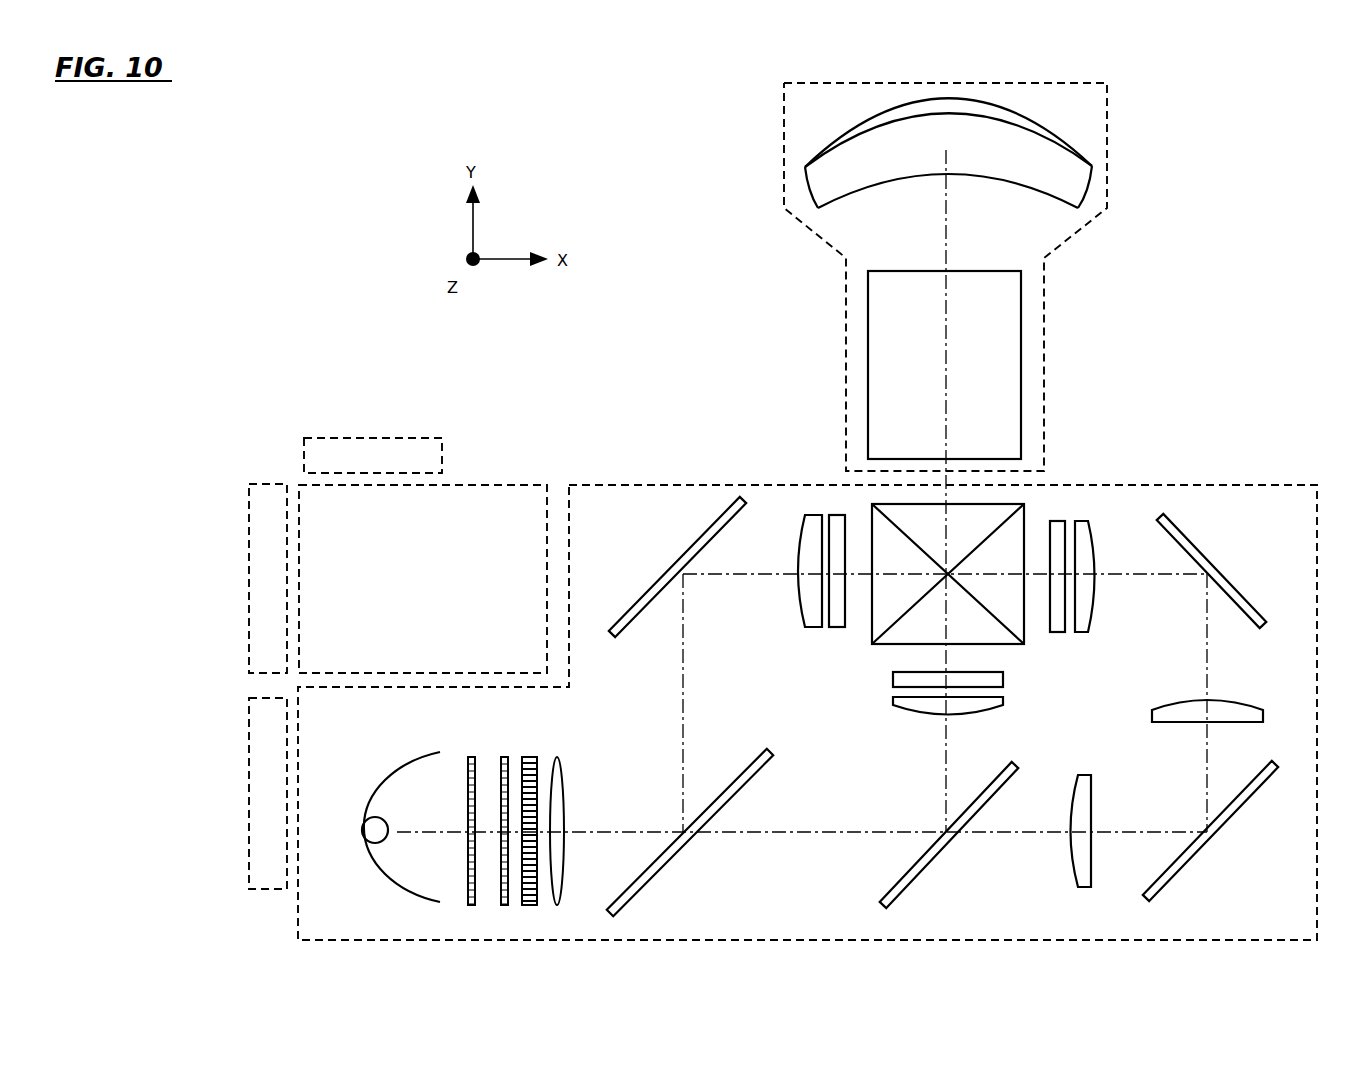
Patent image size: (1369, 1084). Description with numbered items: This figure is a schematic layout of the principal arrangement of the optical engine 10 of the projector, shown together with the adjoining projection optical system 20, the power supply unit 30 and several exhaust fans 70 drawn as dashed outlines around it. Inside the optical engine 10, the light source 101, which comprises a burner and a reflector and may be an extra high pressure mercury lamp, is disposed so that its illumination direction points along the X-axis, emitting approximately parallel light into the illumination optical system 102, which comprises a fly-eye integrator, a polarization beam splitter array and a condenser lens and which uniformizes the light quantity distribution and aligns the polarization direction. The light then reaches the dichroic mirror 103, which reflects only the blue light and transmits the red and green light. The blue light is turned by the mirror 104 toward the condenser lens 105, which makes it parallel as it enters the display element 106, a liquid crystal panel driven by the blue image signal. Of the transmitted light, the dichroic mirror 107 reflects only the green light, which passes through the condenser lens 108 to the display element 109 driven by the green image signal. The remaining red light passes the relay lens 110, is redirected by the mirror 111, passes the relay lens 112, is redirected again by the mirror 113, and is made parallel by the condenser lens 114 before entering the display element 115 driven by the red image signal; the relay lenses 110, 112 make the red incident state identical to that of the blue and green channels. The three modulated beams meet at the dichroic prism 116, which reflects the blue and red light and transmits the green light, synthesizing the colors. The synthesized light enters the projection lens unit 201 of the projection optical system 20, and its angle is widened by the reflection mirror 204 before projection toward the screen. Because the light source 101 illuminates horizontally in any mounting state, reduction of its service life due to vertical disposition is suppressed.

The optical engine 10 is at (1228, 485).
The projection optical system 20 is at (832, 345).
The power supply unit 30 is at (490, 484).
The exhaust fan 70 is at (328, 437).
The light source 101 is at (377, 758).
The illumination optical system 102 is at (564, 741).
The dichroic mirror 103 is at (658, 862).
The mirror 104 is at (663, 584).
The condenser lens 105 is at (808, 600).
The display element 106 is at (838, 623).
The dichroic mirror 107 is at (923, 863).
The condenser lens 108 is at (930, 714).
The display element 109 is at (887, 675).
The relay lens 110 is at (1088, 800).
The mirror 111 is at (1190, 868).
The relay lens 112 is at (1230, 700).
The mirror 113 is at (1233, 582).
The condenser lens 114 is at (1090, 605).
The display element 115 is at (1057, 635).
The dichroic prism 116 is at (1005, 637).
The projection lens unit 201 is at (1015, 362).
The reflection mirror 204 is at (1070, 134).